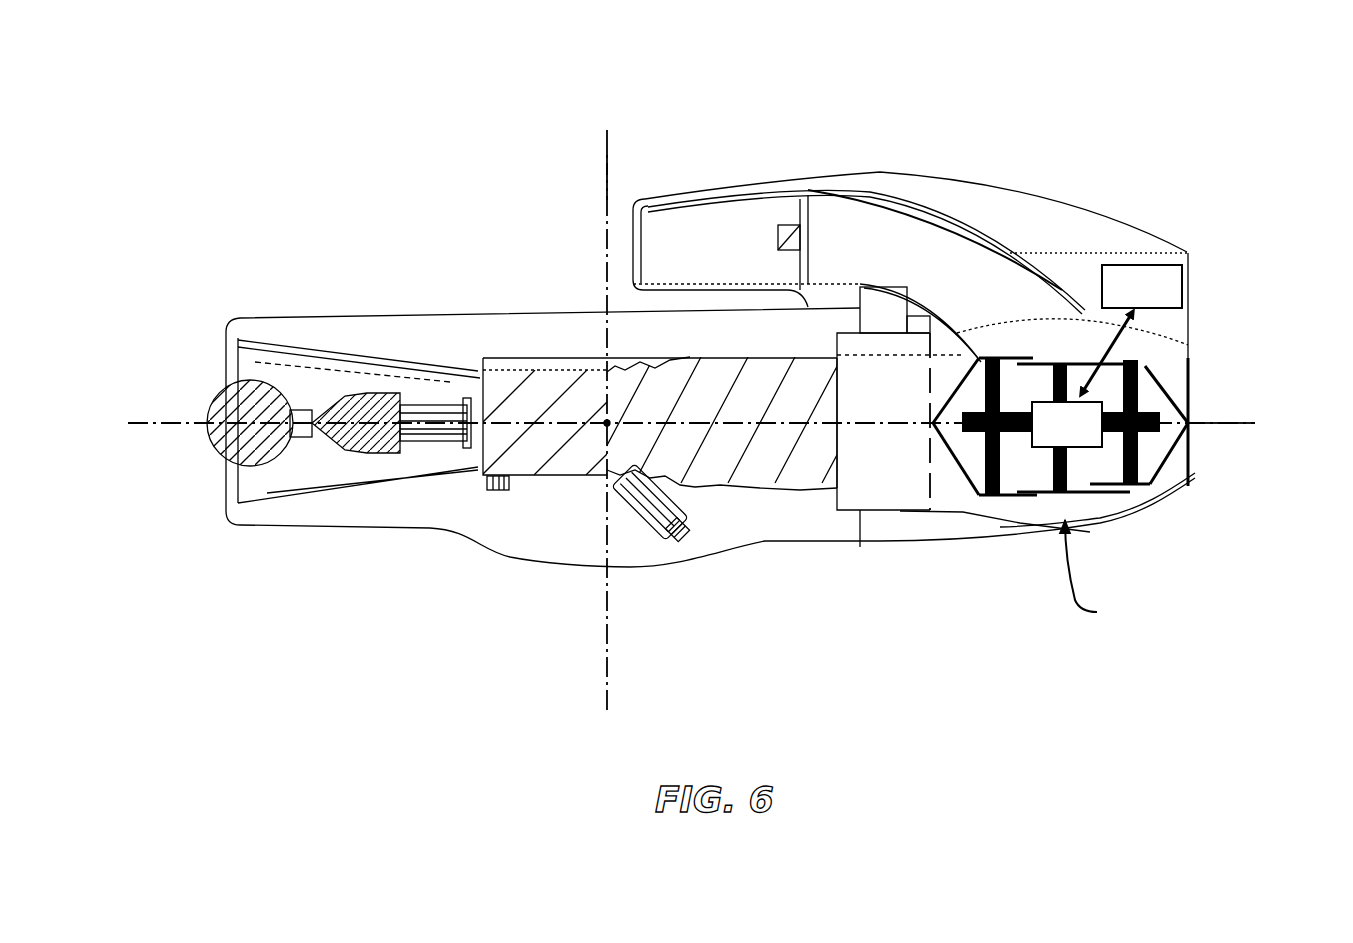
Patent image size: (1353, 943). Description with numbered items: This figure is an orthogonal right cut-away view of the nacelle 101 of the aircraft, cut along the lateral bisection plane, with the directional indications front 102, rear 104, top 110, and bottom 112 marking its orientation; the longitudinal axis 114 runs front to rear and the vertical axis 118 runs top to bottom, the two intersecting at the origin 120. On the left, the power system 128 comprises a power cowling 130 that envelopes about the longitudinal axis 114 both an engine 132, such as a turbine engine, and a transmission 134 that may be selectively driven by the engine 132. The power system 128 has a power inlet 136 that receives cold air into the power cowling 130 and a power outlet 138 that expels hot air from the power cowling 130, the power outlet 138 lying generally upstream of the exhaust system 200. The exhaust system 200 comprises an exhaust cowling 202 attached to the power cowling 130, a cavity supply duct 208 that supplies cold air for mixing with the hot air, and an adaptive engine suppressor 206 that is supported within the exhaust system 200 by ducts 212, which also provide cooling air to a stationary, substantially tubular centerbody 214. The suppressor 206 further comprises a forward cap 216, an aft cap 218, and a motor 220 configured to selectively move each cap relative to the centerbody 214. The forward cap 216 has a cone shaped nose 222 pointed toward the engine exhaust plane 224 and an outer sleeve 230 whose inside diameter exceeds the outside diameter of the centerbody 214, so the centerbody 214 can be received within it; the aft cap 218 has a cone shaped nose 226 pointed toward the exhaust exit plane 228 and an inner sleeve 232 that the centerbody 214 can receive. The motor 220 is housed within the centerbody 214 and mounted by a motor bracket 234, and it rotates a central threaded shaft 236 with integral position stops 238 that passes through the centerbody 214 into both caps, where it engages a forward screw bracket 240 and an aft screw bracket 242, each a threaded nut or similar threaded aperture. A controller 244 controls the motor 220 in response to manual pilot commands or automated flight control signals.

The nacelle 101 is at (1150, 140).
The front 102 is at (190, 416).
The rear 104 is at (1228, 437).
The top 110 is at (622, 158).
The bottom 112 is at (598, 662).
The longitudinal axis 114 is at (1250, 412).
The vertical axis 118 is at (603, 160).
The origin 120 is at (603, 418).
The power system 128 is at (422, 283).
The power cowling 130 is at (336, 318).
The engine 132 is at (738, 488).
The transmission 134 is at (225, 395).
The power inlet 136 is at (226, 485).
The power outlet 138 is at (838, 480).
The exhaust system 200 is at (1047, 180).
The exhaust cowling 202 is at (1147, 232).
The adaptive engine suppressor 206 is at (1108, 576).
The cavity supply duct 208 is at (938, 203).
The ducts 212 is at (1068, 360).
The centerbody 214 is at (1097, 497).
The forward cap 216 is at (1015, 495).
The aft cap 218 is at (1157, 373).
The motor 220 is at (1067, 424).
The nose 222 is at (1035, 497).
The engine exhaust plane 224 is at (968, 485).
The nose 226 is at (1193, 455).
The exhaust exit plane 228 is at (1165, 385).
The outer sleeve 230 is at (1025, 358).
The inner sleeve 232 is at (1073, 337).
The motor bracket 234 is at (1058, 357).
The central threaded shaft 236 is at (968, 412).
The integral position stops 238 is at (1015, 357).
The forward screw bracket 240 is at (978, 358).
The aft screw bracket 242 is at (1167, 473).
The controller 244 is at (1132, 329).